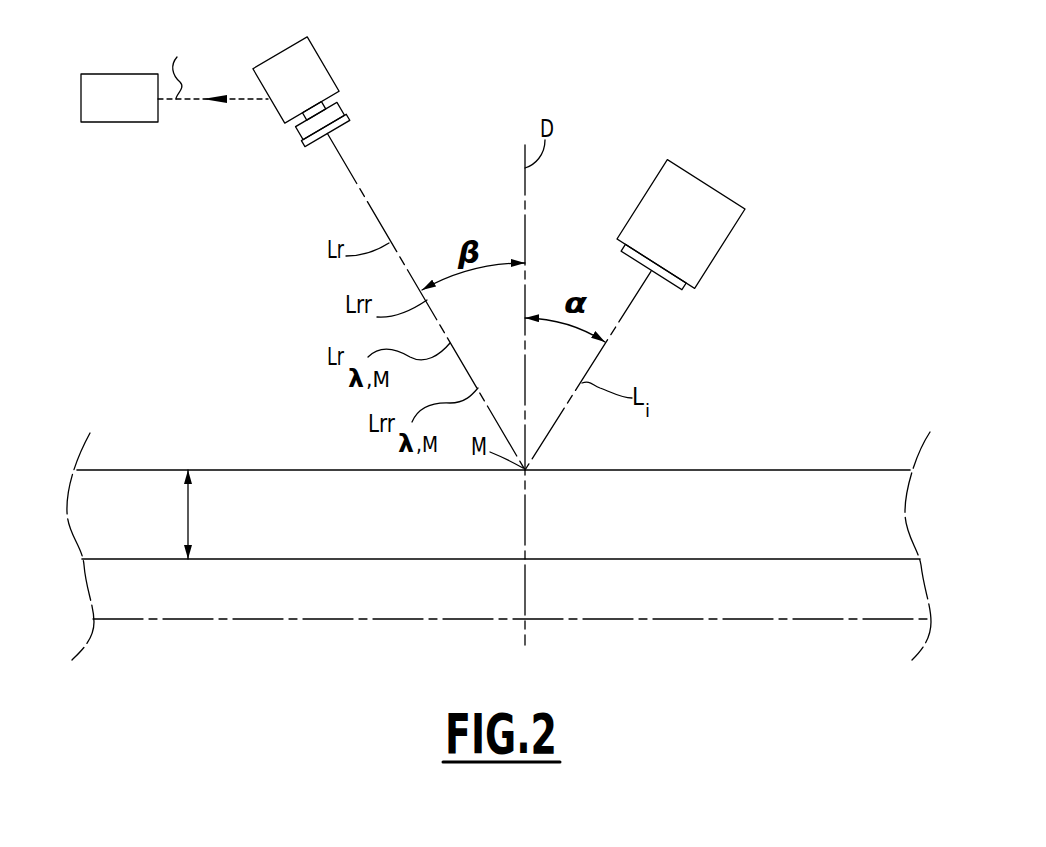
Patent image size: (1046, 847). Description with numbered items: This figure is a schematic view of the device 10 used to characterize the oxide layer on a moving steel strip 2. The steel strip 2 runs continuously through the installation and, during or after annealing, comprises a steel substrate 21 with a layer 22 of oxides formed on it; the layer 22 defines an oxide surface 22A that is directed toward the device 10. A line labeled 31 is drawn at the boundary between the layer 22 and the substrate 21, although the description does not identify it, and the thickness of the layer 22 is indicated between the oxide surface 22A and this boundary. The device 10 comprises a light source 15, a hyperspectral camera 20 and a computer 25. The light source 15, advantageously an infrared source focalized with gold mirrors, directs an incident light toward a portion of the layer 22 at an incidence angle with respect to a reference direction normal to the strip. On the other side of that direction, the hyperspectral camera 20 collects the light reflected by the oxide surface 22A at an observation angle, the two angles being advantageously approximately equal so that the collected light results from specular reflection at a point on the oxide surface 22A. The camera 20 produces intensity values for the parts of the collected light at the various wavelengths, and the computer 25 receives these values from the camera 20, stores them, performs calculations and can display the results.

The device 10 is at (699, 129).
The light source 15 is at (635, 315).
The hyperspectral camera 20 is at (389, 253).
The computer 25 is at (174, 76).
The steel strip 2 is at (230, 455).
The steel substrate 21 is at (307, 595).
The layer of oxides 22 is at (498, 464).
The oxide surface 22A is at (811, 462).
The interface between layer and substrate 31 is at (840, 559).